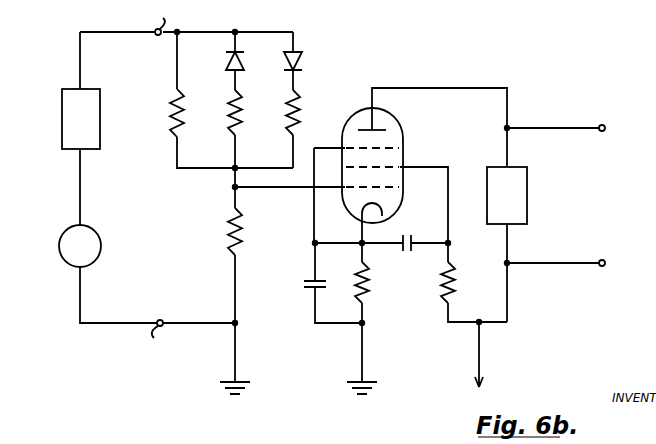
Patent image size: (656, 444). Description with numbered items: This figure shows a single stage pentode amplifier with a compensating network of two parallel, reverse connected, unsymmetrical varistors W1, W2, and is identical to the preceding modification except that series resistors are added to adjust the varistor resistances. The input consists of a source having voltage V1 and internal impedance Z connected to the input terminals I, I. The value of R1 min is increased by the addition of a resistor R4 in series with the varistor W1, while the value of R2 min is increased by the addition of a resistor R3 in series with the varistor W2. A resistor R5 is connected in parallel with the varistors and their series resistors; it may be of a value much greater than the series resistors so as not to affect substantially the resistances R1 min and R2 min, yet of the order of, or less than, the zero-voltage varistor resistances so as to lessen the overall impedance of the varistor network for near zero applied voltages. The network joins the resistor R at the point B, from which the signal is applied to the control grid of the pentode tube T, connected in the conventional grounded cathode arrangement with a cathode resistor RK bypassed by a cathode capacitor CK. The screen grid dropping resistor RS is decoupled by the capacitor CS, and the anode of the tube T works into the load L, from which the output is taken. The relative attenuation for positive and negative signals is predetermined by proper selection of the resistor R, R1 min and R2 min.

The input terminals I is at (156, 181).
The internal impedance Z is at (81, 119).
The source voltage V1 is at (80, 246).
The parallel resistor R5 is at (185, 112).
The series resistor R4 is at (243, 112).
The series resistor R3 is at (301, 112).
The unsymmetrical varistor W1 is at (241, 61).
The unsymmetrical varistor W2 is at (300, 60).
The junction point B is at (232, 187).
The resistor R is at (243, 228).
The pentode tube T is at (392, 112).
The screen decoupling capacitor CS is at (405, 233).
The cathode capacitor CK is at (301, 271).
The cathode resistor RK is at (373, 295).
The screen grid dropping resistor RS is at (459, 295).
The load L is at (507, 195).